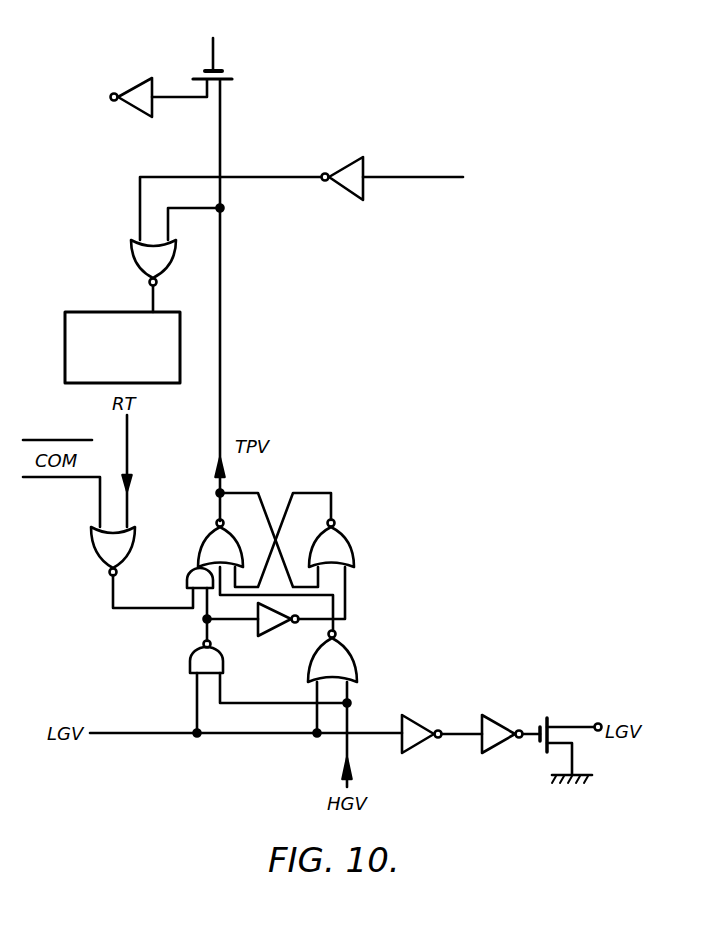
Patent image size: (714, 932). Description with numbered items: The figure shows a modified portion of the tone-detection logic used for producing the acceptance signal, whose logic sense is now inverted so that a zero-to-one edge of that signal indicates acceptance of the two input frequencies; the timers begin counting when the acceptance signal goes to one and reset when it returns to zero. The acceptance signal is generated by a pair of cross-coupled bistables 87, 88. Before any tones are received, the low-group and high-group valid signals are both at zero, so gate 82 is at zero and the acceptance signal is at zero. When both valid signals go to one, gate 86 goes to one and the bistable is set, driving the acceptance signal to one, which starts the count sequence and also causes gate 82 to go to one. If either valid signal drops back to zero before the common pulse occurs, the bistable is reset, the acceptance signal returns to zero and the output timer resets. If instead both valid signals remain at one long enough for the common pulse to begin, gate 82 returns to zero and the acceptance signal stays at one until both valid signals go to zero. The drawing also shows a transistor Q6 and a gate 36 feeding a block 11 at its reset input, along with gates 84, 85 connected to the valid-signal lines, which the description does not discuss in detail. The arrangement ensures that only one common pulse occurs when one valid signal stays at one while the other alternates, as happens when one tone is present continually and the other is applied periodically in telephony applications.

The transistor Q6 is at (212, 47).
The NOR gate 36 is at (131, 248).
The counter with reset input 11 is at (60, 331).
The gate 82 is at (92, 538).
The NAND gate 84 is at (190, 658).
The NOR gate 85 is at (356, 661).
The gate 86 is at (277, 632).
The bistable 87 is at (206, 546).
The bistable 88 is at (351, 542).